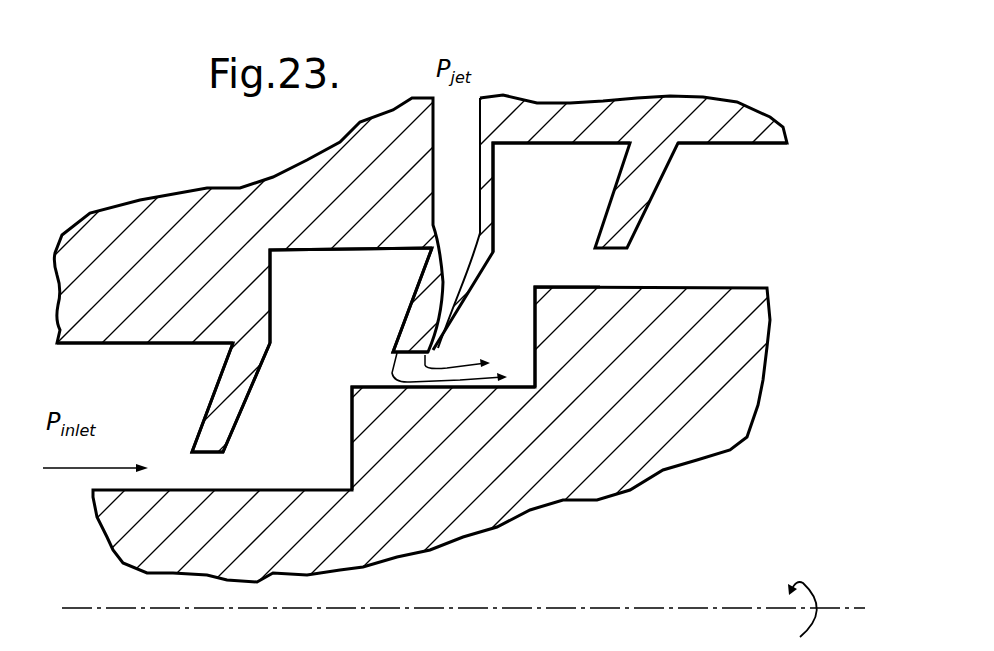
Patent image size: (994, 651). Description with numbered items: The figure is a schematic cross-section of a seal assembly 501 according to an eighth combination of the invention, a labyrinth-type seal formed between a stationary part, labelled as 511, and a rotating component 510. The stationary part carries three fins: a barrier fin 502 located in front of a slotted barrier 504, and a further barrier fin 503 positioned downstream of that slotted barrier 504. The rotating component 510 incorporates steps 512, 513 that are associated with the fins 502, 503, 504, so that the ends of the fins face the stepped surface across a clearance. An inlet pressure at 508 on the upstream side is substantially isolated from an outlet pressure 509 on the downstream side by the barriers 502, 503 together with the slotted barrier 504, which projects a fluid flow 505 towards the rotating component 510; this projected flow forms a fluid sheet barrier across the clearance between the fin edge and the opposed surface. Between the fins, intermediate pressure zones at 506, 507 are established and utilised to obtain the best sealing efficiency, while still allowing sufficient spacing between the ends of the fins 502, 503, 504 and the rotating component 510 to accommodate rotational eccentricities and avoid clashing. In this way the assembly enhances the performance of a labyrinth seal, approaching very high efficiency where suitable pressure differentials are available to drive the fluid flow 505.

The seal assembly 501 is at (178, 177).
The barrier fin 502 is at (207, 432).
The further barrier fin 503 is at (613, 240).
The slotted barrier 504 is at (400, 332).
The fluid flow 505 is at (492, 372).
The intermediate pressure zone 506 is at (377, 284).
The intermediate pressure zone 507 is at (587, 179).
The inlet pressure 508 is at (127, 382).
The outlet pressure 509 is at (777, 259).
The rotating component 510 is at (567, 470).
The stator body 511 is at (333, 180).
The step 512 is at (352, 458).
The step 513 is at (535, 316).